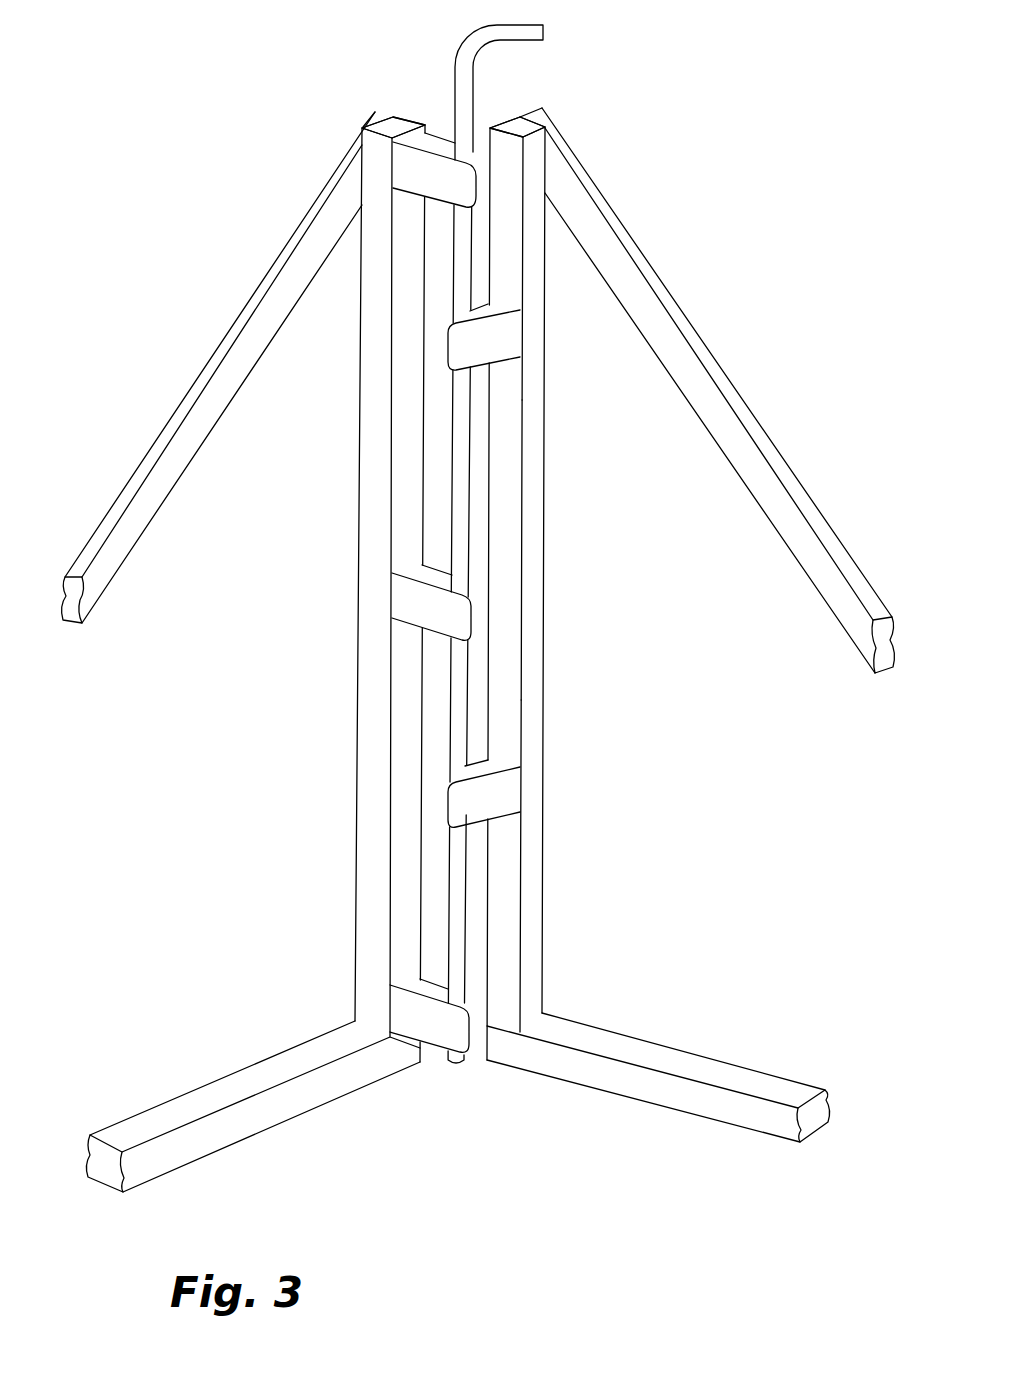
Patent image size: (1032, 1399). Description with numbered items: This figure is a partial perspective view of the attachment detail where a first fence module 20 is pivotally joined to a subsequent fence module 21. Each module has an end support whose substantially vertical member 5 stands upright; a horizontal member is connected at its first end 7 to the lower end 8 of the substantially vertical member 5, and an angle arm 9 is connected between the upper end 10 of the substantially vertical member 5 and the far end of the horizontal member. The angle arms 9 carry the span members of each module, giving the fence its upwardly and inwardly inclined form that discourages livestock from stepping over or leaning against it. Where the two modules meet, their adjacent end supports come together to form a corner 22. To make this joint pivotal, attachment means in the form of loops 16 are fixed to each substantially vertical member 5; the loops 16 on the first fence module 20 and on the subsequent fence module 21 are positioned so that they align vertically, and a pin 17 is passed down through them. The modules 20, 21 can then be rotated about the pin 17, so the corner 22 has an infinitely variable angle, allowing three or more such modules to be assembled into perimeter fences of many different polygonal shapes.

The substantially vertical member 5 is at (370, 648).
The first end 7 is at (658, 1088).
The lower end 8 is at (532, 1003).
The angle arm 9 is at (311, 259).
The upper end 10 is at (530, 145).
The loops 16 is at (503, 343).
The pin 17 is at (500, 25).
The first fence module 20 is at (375, 147).
The subsequent fence module 21 is at (530, 173).
The corner 22 is at (457, 1130).